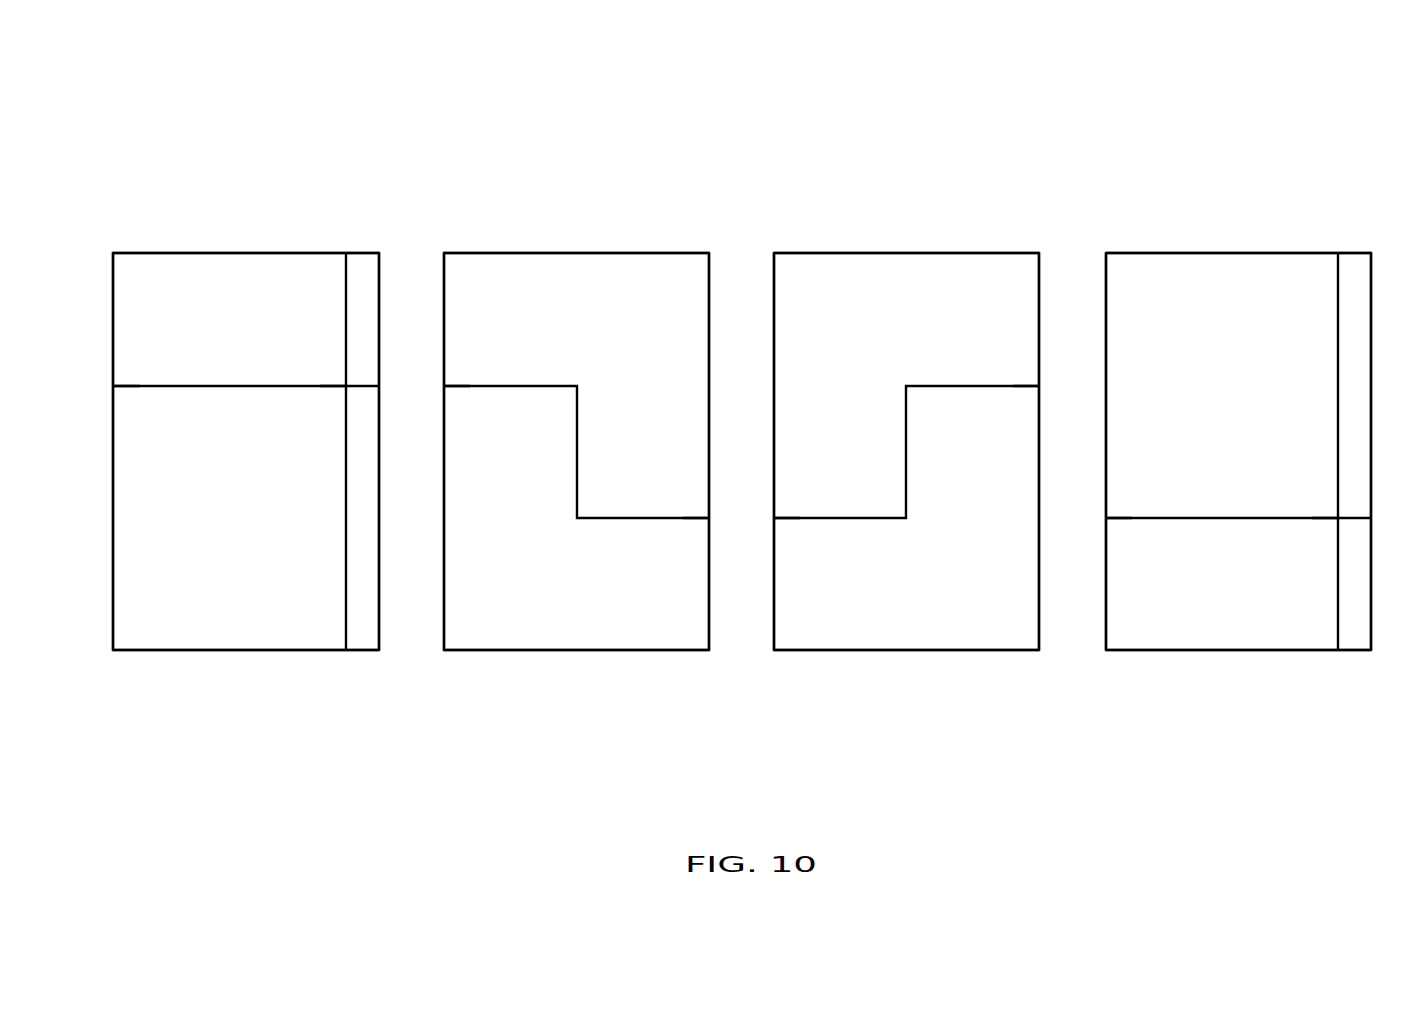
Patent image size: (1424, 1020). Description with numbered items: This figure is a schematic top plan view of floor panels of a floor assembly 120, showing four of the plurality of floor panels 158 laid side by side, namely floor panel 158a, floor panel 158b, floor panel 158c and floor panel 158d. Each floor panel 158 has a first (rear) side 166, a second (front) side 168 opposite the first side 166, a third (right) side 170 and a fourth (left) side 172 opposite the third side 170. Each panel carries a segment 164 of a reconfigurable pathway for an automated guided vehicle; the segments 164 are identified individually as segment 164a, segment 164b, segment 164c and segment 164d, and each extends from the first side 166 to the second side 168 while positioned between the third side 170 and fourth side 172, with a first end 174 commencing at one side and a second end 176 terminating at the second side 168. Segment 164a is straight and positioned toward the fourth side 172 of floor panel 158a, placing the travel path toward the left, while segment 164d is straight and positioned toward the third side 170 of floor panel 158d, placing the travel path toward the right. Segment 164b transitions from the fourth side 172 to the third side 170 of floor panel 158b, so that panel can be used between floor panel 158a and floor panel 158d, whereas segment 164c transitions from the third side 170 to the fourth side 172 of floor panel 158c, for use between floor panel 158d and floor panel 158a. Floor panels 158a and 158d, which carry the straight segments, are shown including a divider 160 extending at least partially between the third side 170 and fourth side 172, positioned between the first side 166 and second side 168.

The floor assembly 120 is at (1375, 718).
The floor panels 158 is at (1202, 117).
The floor panel 158a is at (245, 253).
The floor panel 158b is at (576, 253).
The floor panel 158c is at (906, 253).
The floor panel 158d is at (1238, 253).
The divider 160 is at (346, 560).
The segments 164 is at (1085, 150).
The segment 164a is at (232, 386).
The segment 164b is at (635, 518).
The segment 164c is at (865, 518).
The segment 164d is at (1217, 518).
The first side 166 is at (113, 633).
The second side 168 is at (379, 270).
The third side 170 is at (243, 650).
The fourth side 172 is at (157, 253).
The first end 174 is at (130, 375).
The second end 176 is at (335, 375).